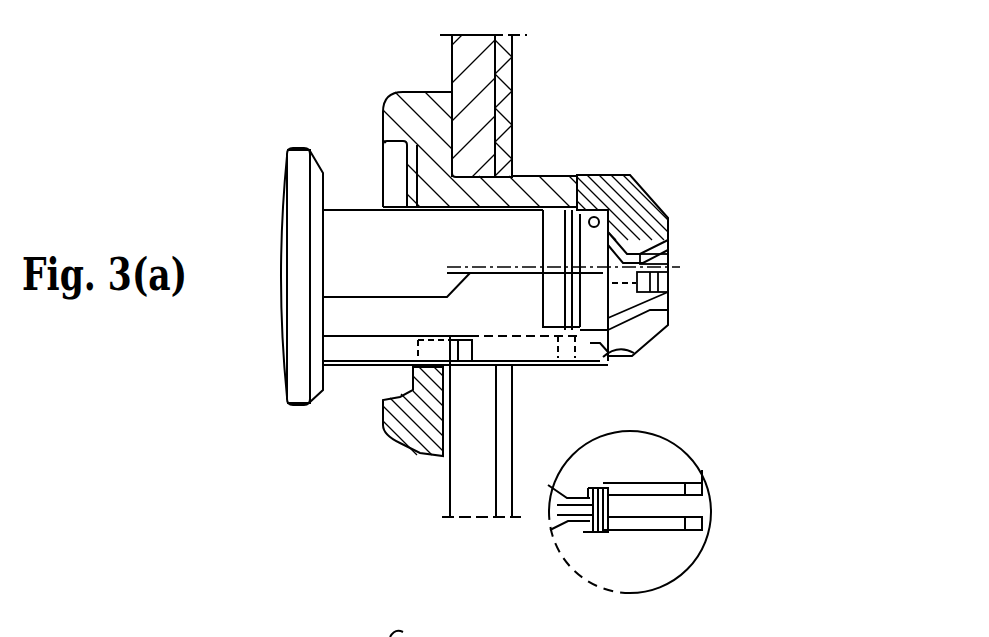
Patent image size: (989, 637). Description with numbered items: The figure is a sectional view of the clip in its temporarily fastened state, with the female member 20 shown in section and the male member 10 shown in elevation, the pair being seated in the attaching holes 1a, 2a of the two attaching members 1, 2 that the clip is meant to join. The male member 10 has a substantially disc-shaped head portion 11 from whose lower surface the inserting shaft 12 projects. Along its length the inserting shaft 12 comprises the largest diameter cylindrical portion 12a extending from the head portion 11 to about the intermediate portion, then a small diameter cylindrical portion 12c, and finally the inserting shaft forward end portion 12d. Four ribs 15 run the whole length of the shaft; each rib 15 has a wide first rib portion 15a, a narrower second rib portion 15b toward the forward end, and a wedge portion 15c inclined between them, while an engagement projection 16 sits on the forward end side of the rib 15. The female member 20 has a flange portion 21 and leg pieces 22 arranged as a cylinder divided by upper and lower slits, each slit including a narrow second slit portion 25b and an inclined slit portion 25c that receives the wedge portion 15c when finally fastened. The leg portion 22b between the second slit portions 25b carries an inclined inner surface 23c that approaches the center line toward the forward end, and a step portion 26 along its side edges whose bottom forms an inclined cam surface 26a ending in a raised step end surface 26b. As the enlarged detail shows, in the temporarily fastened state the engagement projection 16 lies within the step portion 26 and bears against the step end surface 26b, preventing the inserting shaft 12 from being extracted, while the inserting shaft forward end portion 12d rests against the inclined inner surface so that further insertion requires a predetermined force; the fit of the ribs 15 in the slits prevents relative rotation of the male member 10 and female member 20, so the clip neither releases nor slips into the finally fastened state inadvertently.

The attaching member 1 is at (503, 50).
The attaching hole 1a is at (528, 176).
The attaching member 2 is at (470, 52).
The attaching hole 2a is at (483, 167).
The male member 10 is at (186, 52).
The head portion 11 is at (281, 172).
The inserting shaft 12 is at (338, 211).
The largest diameter cylindrical portion 12a is at (363, 225).
The small diameter cylindrical portion 12c is at (553, 227).
The inserting shaft forward end portion 12d is at (597, 240).
The rib 15 is at (348, 353).
The first rib portion 15a is at (481, 441).
The second rib portion 15b is at (558, 510).
The wedge portion 15c is at (407, 367).
The engagement projection 16 is at (603, 488).
The female member 20 is at (480, 191).
The flange portion 21 is at (398, 99).
The leg piece 22 is at (614, 176).
The leg portion 22b is at (668, 466).
The inclined inner surface 23c is at (610, 238).
The second slit portion 25b is at (683, 507).
The inclined slit portion 25c is at (550, 512).
The step portion 26 is at (660, 523).
The inclined cam surface 26a is at (646, 523).
The step end surface 26b is at (592, 533).